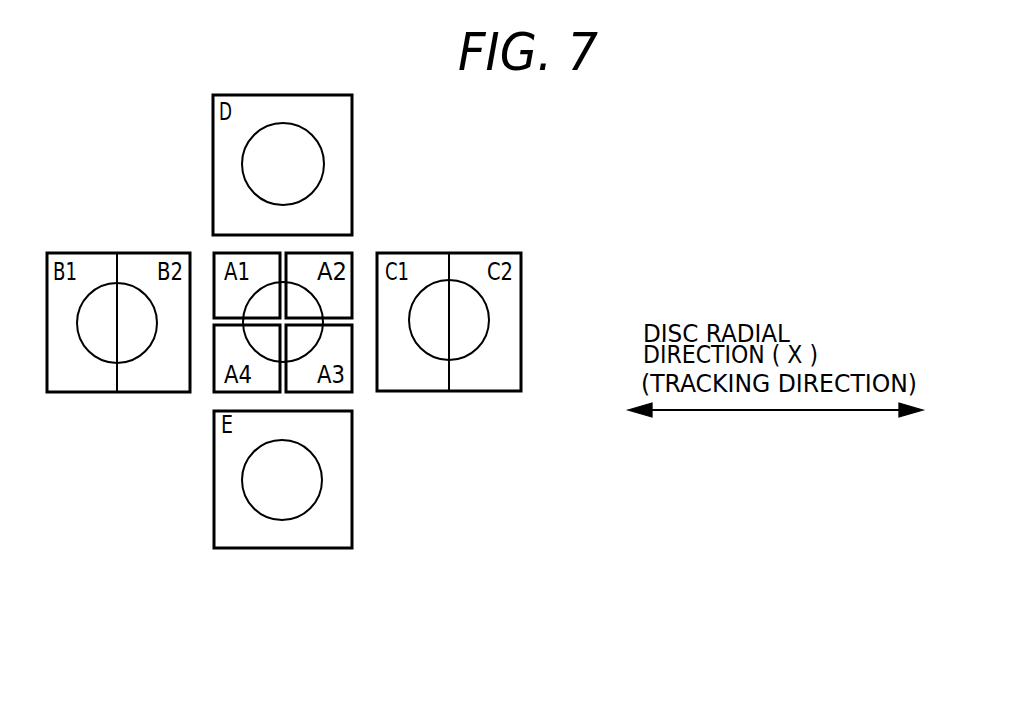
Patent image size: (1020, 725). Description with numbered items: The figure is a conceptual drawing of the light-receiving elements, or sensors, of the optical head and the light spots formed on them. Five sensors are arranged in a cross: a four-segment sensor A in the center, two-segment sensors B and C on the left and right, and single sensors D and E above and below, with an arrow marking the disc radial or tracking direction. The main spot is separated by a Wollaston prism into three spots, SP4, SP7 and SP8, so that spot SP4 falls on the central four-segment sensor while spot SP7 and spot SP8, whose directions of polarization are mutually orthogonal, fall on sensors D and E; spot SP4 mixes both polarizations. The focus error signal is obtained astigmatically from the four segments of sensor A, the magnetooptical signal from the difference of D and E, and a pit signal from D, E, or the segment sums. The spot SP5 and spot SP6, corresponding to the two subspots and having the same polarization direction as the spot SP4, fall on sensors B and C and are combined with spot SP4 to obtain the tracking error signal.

The spot SP4 is at (323, 339).
The spot SP5 is at (92, 355).
The spot SP6 is at (485, 338).
The spot SP7 is at (324, 164).
The spot SP8 is at (315, 489).